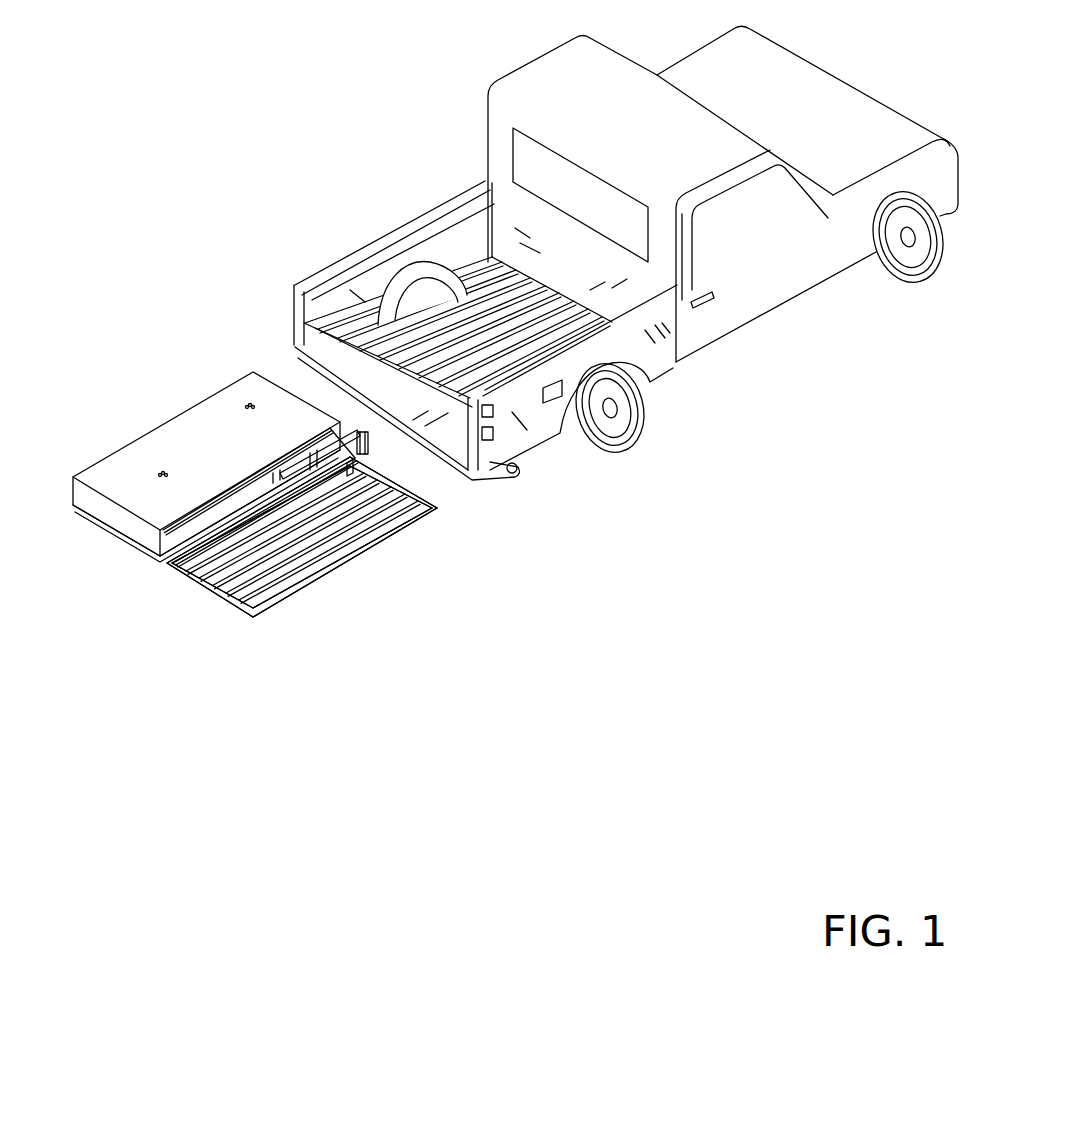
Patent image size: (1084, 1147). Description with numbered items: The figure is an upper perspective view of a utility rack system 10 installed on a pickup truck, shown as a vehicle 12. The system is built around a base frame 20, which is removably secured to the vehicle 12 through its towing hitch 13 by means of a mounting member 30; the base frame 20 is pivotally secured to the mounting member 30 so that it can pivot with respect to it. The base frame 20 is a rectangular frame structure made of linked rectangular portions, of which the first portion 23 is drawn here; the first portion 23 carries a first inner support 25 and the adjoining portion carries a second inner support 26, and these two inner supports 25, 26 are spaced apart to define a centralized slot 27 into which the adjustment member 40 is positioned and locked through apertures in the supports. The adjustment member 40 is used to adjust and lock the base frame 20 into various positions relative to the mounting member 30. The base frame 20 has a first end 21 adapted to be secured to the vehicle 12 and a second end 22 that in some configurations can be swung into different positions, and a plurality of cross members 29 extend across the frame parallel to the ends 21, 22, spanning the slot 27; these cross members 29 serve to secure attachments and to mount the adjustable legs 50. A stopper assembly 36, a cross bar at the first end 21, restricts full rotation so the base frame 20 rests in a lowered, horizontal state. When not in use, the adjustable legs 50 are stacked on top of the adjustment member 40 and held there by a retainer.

The utility rack system 10 is at (150, 260).
The vehicle 12 is at (523, 67).
The towing hitch 13 is at (373, 432).
The base frame 20 is at (337, 603).
The first end 21 is at (240, 595).
The second end 22 is at (357, 477).
The first portion 23 is at (330, 577).
The first inner support 25 is at (178, 575).
The second inner support 26 is at (170, 527).
The centralized slot 27 is at (163, 557).
The cross members 29 is at (363, 523).
The mounting member 30 is at (377, 447).
The stopper assembly 36 is at (430, 500).
The adjustment member 40 is at (230, 497).
The adjustable legs 50 is at (293, 490).